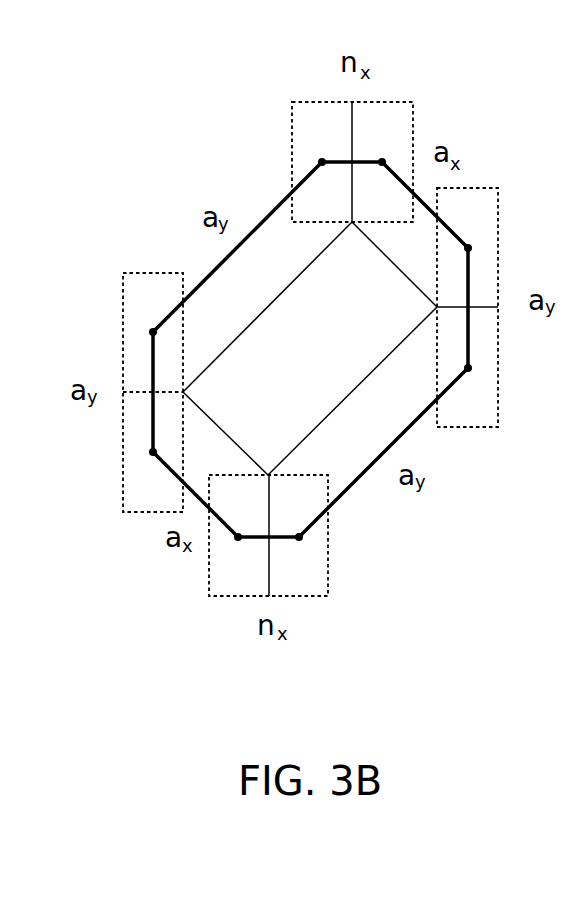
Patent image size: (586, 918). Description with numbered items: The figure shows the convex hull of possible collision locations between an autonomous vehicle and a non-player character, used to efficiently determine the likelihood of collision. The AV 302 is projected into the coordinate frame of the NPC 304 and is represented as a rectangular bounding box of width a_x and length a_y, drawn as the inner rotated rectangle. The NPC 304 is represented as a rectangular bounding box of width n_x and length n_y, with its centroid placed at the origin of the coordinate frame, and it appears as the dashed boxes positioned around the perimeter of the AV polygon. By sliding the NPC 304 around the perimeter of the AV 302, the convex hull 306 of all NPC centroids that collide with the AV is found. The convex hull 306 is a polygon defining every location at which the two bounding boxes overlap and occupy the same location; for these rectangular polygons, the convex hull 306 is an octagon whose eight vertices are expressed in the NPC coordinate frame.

The AV 302 is at (337, 362).
The NPC 304 is at (238, 563).
The convex hull 306 is at (350, 440).